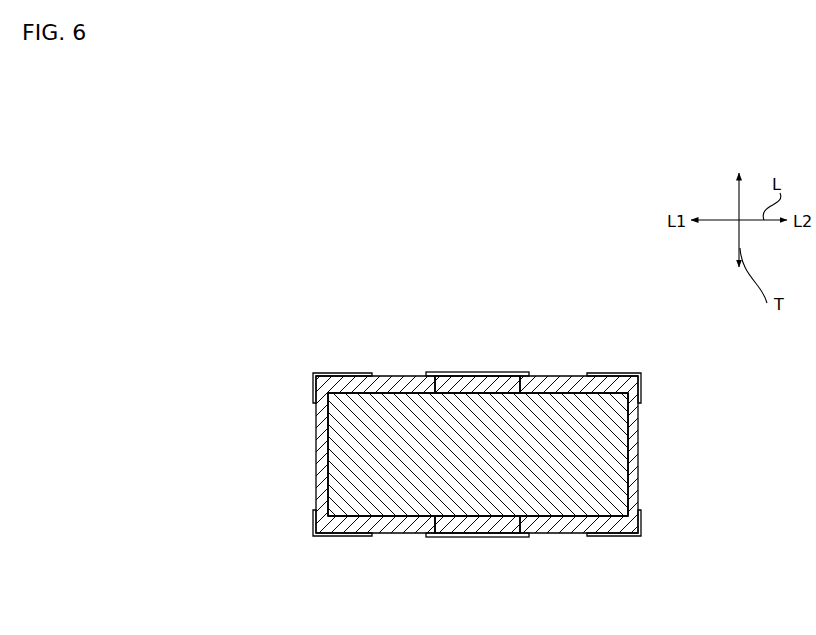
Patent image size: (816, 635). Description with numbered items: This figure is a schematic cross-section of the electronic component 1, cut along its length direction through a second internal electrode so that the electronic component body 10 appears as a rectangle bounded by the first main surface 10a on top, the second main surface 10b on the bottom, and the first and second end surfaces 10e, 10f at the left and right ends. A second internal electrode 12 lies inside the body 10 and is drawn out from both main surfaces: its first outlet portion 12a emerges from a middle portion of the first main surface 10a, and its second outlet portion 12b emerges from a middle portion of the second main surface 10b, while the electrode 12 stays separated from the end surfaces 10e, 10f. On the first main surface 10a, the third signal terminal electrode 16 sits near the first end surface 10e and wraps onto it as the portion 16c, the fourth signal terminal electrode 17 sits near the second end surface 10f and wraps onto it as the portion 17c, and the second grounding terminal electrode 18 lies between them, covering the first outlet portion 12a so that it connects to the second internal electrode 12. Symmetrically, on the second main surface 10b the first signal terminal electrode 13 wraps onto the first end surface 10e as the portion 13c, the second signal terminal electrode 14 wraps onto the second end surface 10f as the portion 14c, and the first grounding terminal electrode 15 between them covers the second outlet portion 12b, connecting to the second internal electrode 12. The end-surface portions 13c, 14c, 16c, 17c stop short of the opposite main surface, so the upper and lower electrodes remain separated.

The electronic component 1 is at (557, 357).
The electronic component body 10 is at (381, 376).
The first main surface 10a is at (405, 377).
The second main surface 10b is at (416, 534).
The first end surface 10e is at (316, 448).
The second end surface 10f is at (638, 447).
The second internal electrode 12 is at (548, 378).
The first outlet portion 12a is at (463, 376).
The second outlet portion 12b is at (522, 522).
The first signal terminal electrode 13 is at (347, 537).
The portion disposed on the first end surface 13c is at (313, 521).
The second signal terminal electrode 14 is at (643, 530).
The portion disposed on the second end surface 14c is at (643, 517).
The first grounding terminal electrode 15 is at (487, 537).
The third signal terminal electrode 16 is at (326, 373).
The portion disposed on the first end surface 16c is at (313, 382).
The fourth signal terminal electrode 17 is at (642, 373).
The portion disposed on the second end surface 17c is at (643, 379).
The second grounding terminal electrode 18 is at (478, 372).